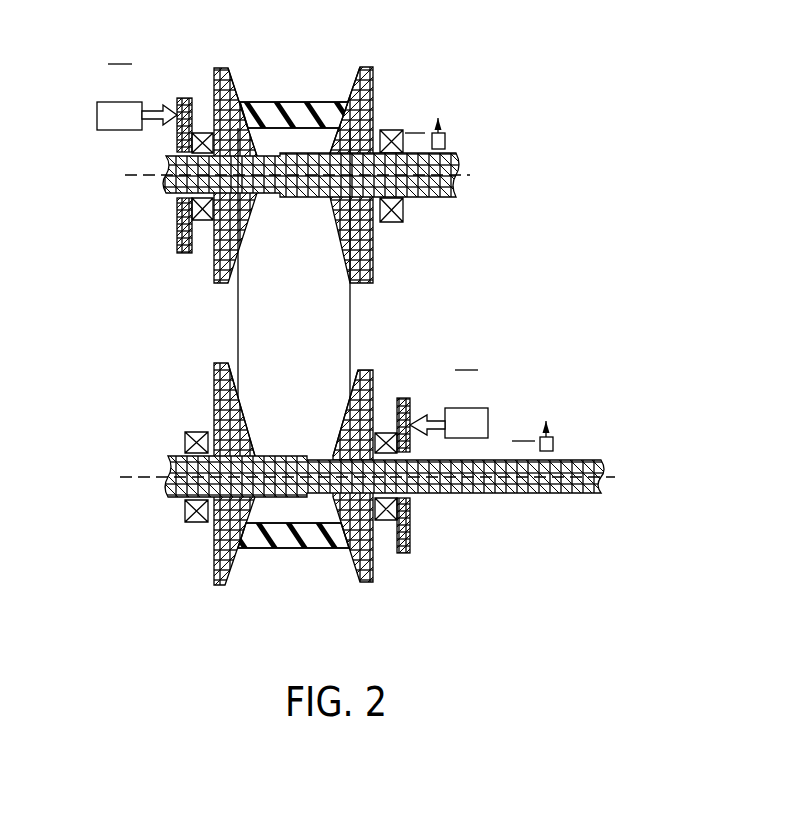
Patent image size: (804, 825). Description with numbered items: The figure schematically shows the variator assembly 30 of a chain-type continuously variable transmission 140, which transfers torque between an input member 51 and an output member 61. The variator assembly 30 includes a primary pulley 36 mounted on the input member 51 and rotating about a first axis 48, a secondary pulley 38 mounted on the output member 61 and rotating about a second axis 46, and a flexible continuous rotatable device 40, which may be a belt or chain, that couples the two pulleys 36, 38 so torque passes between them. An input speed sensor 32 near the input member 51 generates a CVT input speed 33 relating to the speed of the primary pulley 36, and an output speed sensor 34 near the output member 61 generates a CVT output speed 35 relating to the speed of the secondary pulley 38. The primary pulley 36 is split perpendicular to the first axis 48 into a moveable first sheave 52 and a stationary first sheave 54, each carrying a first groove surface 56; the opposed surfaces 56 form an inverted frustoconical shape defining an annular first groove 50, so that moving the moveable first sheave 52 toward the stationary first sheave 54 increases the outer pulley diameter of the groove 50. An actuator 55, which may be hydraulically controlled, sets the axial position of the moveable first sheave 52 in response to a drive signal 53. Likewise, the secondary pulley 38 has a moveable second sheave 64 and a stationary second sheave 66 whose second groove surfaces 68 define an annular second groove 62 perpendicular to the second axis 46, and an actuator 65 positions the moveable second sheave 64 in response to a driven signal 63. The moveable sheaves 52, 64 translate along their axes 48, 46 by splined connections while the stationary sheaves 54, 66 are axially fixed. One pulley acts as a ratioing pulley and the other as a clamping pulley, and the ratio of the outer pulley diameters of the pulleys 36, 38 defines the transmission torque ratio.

The continuously variable transmission 140 is at (341, 350).
The variator assembly 30 is at (289, 469).
The input speed sensor 32 is at (446, 142).
The CVT input speed 33 is at (415, 122).
The output speed sensor 34 is at (554, 445).
The CVT output speed 35 is at (523, 430).
The primary pulley 36 is at (315, 155).
The secondary pulley 38 is at (313, 469).
The flexible continuous rotatable device 40 is at (352, 310).
The second axis 46 is at (140, 477).
The first axis 48 is at (160, 175).
The annular first groove 50 is at (309, 99).
The input member 51 is at (437, 200).
The moveable first sheave 52 is at (213, 80).
The drive signal 53 is at (120, 100).
The stationary first sheave 54 is at (366, 80).
The actuator 55 is at (110, 102).
The first groove surface 56 is at (240, 92).
The output member 61 is at (448, 500).
The annular second groove 62 is at (287, 552).
The driven signal 63 is at (467, 406).
The moveable second sheave 64 is at (376, 380).
The actuator 65 is at (476, 408).
The stationary second sheave 66 is at (214, 420).
The second groove surface 68 is at (231, 377).